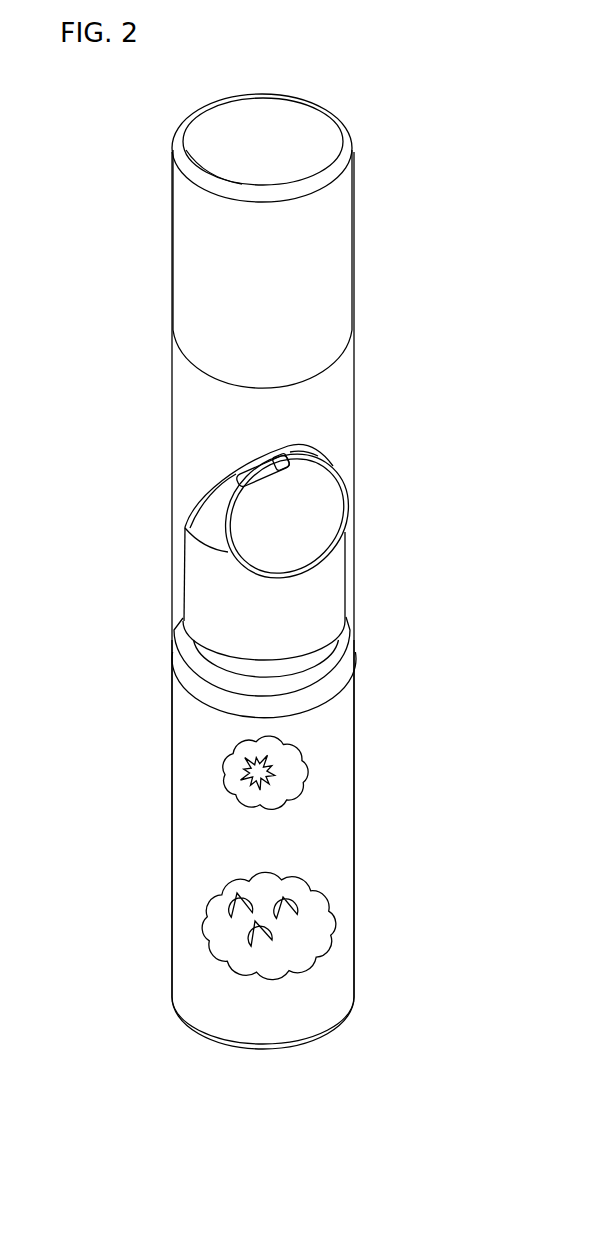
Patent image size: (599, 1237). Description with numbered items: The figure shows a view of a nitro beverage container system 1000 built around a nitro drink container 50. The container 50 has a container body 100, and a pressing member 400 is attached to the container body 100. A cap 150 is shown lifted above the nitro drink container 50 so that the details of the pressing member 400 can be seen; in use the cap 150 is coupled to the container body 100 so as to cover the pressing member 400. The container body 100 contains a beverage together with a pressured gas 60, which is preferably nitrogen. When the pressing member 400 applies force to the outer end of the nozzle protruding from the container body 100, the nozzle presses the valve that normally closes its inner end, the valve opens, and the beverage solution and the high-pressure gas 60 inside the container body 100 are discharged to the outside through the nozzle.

The nitro beverage container system 1000 is at (517, 62).
The cap 150 is at (345, 292).
The pressing member 400 is at (345, 590).
The container body 100 is at (343, 823).
The nitro drink container 50 is at (147, 822).
The pressured gas 60 is at (282, 767).